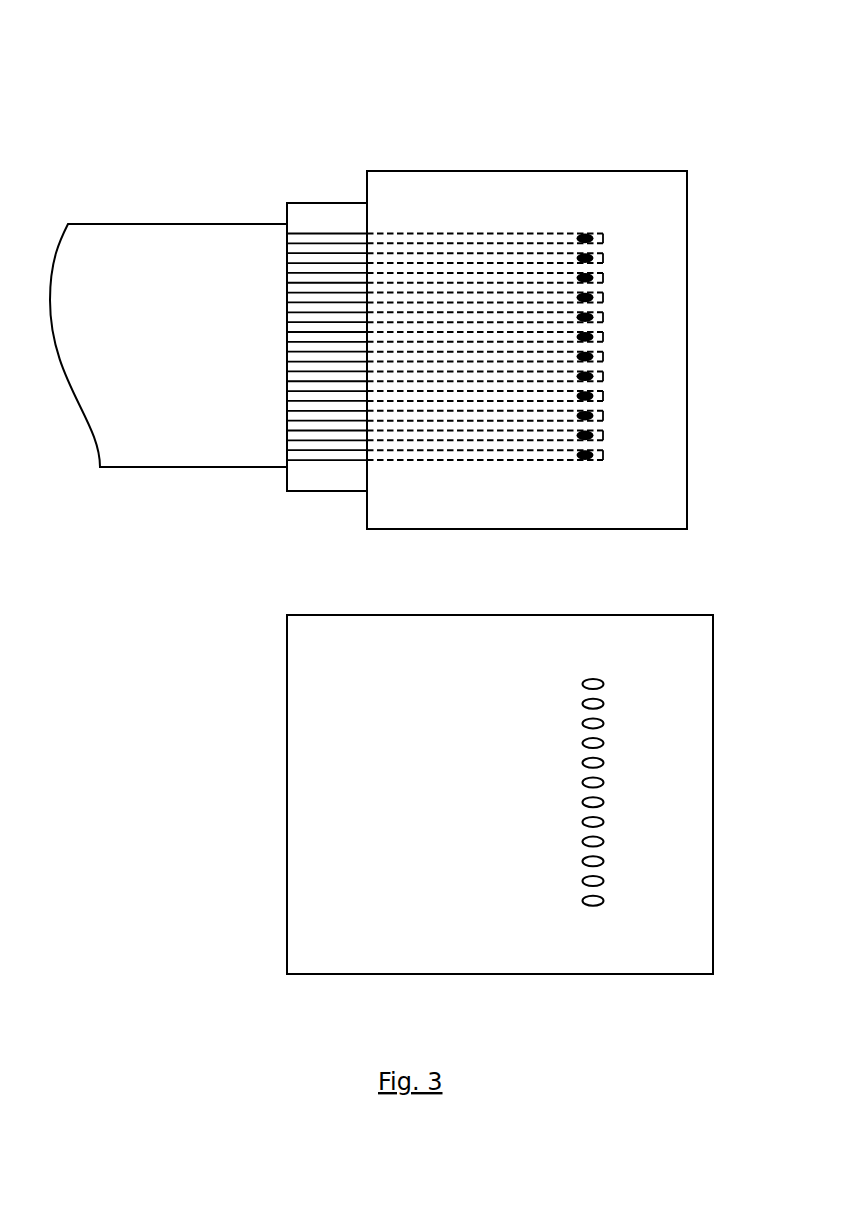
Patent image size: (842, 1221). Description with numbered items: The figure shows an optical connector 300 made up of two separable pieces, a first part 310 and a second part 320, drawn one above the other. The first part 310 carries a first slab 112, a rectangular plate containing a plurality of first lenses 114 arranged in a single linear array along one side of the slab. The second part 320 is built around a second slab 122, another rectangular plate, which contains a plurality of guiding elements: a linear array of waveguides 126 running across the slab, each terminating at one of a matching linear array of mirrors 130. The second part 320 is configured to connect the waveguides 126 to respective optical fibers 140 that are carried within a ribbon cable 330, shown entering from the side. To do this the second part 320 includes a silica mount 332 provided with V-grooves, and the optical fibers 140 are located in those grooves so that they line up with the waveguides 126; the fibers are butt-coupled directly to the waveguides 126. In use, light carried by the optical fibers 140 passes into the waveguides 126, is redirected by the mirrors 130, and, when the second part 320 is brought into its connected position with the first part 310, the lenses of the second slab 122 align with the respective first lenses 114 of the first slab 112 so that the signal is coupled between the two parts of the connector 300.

The optical connector 300 is at (172, 82).
The second part 320 is at (178, 527).
The first part 310 is at (196, 912).
The ribbon cable 330 is at (133, 239).
The silica mount 332 is at (327, 479).
The optical fibers 140 is at (326, 237).
The second slab 122 is at (668, 372).
The waveguides 126 is at (475, 240).
The mirrors 130 is at (583, 237).
The first slab 112 is at (321, 798).
The first lenses 114 is at (592, 901).